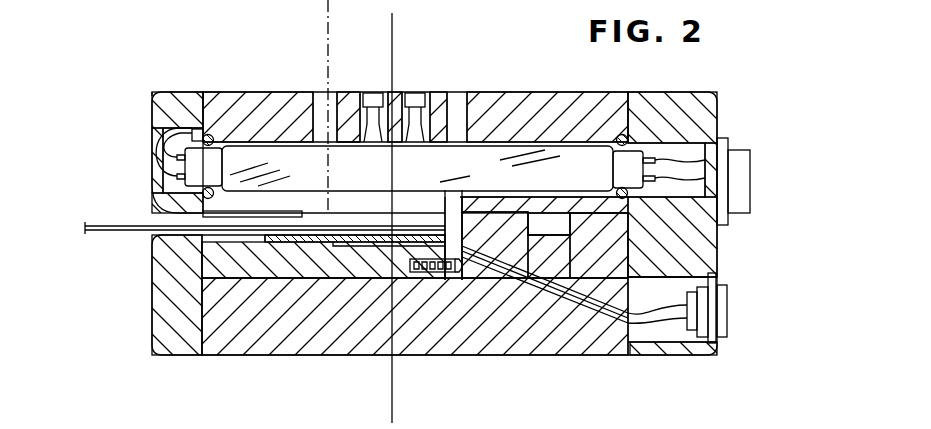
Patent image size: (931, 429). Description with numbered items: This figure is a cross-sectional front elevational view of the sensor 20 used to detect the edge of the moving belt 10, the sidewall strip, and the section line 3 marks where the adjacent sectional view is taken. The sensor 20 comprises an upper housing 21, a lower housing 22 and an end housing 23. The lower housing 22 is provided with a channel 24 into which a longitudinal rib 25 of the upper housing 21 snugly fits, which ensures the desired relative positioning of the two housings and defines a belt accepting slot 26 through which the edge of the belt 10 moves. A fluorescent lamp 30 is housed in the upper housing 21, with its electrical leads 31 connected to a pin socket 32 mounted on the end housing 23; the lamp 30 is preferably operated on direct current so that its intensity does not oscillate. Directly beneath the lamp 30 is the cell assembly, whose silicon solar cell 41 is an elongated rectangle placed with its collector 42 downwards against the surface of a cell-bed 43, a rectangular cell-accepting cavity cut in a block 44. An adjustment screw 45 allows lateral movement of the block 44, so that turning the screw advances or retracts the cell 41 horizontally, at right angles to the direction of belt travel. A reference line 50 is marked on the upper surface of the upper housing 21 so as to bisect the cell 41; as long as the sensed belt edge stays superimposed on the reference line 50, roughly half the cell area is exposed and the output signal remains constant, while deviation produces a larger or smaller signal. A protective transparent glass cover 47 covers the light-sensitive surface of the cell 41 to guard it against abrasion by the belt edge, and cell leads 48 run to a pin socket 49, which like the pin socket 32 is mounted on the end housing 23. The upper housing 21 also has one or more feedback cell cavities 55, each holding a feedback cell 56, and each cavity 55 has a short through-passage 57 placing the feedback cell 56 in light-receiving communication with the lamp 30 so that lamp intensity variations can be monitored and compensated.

The section line 3- 3 is at (360, 4).
The belt 10 is at (99, 208).
The sensor 20 is at (134, 73).
The upper housing 21 is at (270, 91).
The lower housing 22 is at (523, 357).
The end housing 23 is at (718, 258).
The channel 24 is at (553, 236).
The longitudinal rib 25 is at (545, 224).
The belt accepting slot 26 is at (185, 218).
The fluorescent lamp 30 is at (498, 182).
The electrical leads 31 is at (693, 180).
The pin socket 32 is at (752, 185).
The silicon solar cell 41 is at (305, 242).
The collector 42 is at (372, 250).
The cell-bed 43 is at (363, 245).
The block 44 is at (205, 268).
The adjustment screw 45 is at (447, 235).
The protective transparent glass cover 47 is at (273, 240).
The cell leads 48 is at (665, 310).
The pin socket 49 is at (727, 318).
The reference line 50 is at (391, 46).
The feedback cell cavity 55 is at (374, 91).
The feedback cell 56 is at (418, 91).
The through-passage 57 is at (366, 133).